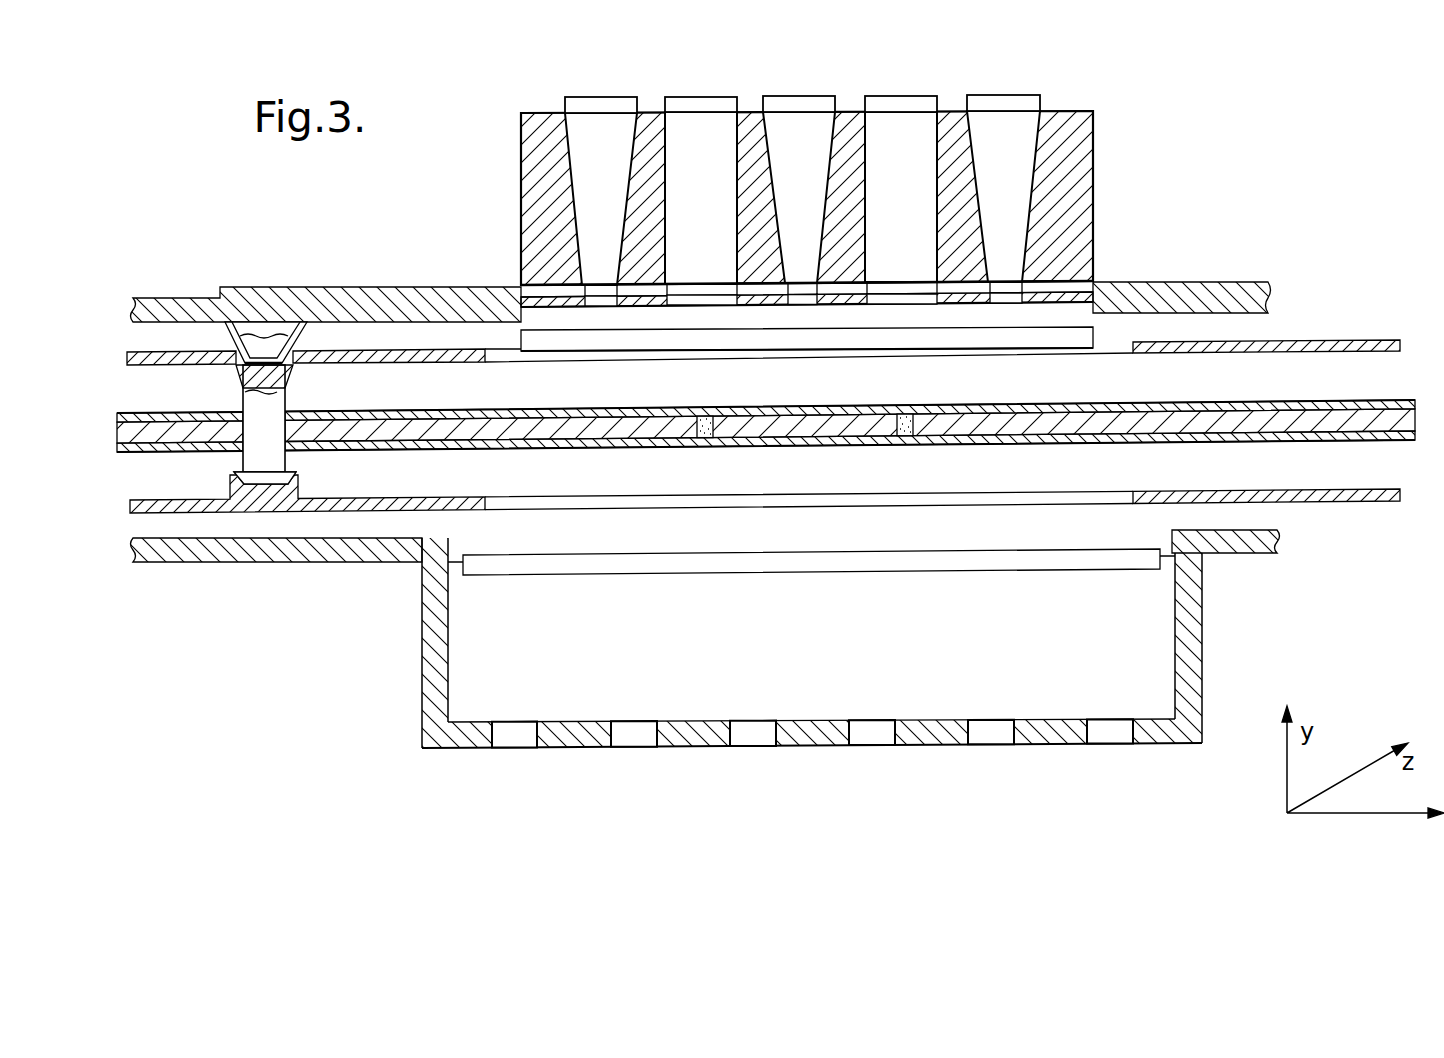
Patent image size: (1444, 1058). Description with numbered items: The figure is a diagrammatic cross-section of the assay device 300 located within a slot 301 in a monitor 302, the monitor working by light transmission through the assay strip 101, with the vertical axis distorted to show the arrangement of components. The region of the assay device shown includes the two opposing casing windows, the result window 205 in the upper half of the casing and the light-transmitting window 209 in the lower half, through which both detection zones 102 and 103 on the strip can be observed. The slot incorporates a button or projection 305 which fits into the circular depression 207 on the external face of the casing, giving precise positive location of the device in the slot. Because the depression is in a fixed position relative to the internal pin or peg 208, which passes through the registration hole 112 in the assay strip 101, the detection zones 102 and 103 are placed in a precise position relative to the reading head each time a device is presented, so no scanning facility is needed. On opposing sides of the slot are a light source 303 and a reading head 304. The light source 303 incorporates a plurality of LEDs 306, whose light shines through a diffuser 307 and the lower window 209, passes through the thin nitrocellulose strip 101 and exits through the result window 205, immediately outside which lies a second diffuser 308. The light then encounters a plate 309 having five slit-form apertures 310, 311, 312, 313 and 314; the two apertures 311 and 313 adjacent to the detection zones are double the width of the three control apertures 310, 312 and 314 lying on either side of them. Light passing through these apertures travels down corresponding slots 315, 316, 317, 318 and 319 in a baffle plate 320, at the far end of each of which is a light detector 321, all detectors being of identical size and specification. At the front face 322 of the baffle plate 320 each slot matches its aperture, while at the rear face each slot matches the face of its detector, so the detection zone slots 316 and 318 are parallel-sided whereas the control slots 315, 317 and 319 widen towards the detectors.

The assay strip 101 is at (556, 442).
The detection zone 102 is at (705, 438).
The detection zone 103 is at (905, 438).
The hole 112 is at (222, 428).
The window 205 is at (503, 362).
The depression 207 is at (235, 368).
The pin 208 is at (268, 403).
The window 209 is at (770, 503).
The assay device 300 is at (1366, 496).
The slot 301 is at (1266, 330).
The monitor 302 is at (1224, 292).
The light source 303 is at (815, 749).
The reading head 304 is at (1098, 182).
The button 305 is at (260, 345).
The LEDs 306 is at (1100, 730).
The diffuser 307 is at (746, 570).
The second diffuser 308 is at (1062, 349).
The plate 309 is at (550, 302).
The aperture 310 is at (600, 306).
The aperture 311 is at (705, 305).
The aperture 312 is at (803, 304).
The aperture 313 is at (903, 304).
The aperture 314 is at (1010, 303).
The slot 315 is at (575, 160).
The slot 316 is at (675, 160).
The slot 317 is at (775, 160).
The slot 318 is at (875, 160).
The slot 319 is at (977, 160).
The baffle plate 320 is at (536, 183).
The light detector 321 is at (987, 97).
The front face 322 is at (1073, 292).